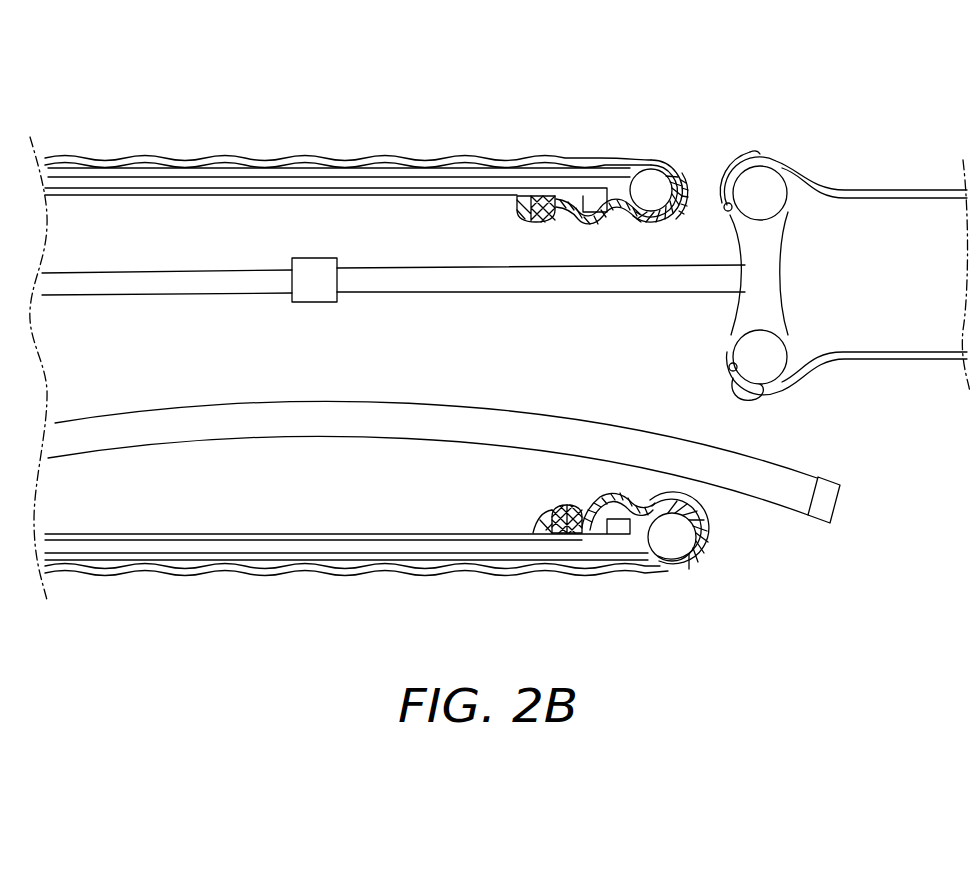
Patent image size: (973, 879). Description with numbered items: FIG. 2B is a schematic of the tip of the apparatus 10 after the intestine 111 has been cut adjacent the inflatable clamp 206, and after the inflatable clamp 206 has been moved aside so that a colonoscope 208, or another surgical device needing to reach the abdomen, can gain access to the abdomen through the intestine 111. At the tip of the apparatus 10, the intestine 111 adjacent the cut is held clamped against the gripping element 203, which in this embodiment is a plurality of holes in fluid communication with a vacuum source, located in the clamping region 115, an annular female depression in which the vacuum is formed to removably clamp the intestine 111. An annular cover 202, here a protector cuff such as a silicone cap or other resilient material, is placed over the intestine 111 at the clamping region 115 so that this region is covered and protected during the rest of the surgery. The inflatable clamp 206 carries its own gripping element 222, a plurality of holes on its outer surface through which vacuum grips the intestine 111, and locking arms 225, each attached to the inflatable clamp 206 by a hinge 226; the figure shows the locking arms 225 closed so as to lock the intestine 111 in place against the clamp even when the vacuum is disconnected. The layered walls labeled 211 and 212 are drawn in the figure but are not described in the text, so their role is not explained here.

The apparatus 10 is at (615, 104).
The intestine 111 is at (256, 158).
The clamping region 115 is at (587, 241).
The annular cover 202 is at (688, 186).
The gripping element 203 is at (562, 192).
The inflatable clamp 206 is at (781, 275).
The colonoscope 208 is at (765, 497).
The outer layer 211 is at (163, 182).
The inner layer 212 is at (157, 537).
The gripping element 222 is at (762, 175).
The locking arms 225 is at (744, 398).
The hinge 226 is at (731, 365).